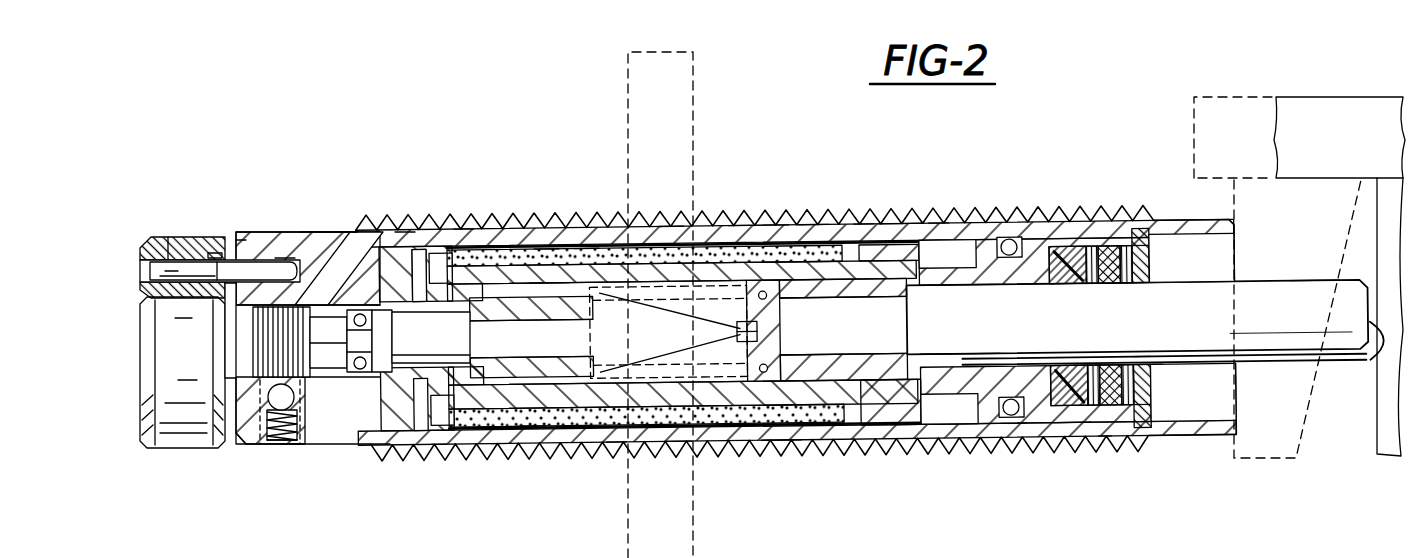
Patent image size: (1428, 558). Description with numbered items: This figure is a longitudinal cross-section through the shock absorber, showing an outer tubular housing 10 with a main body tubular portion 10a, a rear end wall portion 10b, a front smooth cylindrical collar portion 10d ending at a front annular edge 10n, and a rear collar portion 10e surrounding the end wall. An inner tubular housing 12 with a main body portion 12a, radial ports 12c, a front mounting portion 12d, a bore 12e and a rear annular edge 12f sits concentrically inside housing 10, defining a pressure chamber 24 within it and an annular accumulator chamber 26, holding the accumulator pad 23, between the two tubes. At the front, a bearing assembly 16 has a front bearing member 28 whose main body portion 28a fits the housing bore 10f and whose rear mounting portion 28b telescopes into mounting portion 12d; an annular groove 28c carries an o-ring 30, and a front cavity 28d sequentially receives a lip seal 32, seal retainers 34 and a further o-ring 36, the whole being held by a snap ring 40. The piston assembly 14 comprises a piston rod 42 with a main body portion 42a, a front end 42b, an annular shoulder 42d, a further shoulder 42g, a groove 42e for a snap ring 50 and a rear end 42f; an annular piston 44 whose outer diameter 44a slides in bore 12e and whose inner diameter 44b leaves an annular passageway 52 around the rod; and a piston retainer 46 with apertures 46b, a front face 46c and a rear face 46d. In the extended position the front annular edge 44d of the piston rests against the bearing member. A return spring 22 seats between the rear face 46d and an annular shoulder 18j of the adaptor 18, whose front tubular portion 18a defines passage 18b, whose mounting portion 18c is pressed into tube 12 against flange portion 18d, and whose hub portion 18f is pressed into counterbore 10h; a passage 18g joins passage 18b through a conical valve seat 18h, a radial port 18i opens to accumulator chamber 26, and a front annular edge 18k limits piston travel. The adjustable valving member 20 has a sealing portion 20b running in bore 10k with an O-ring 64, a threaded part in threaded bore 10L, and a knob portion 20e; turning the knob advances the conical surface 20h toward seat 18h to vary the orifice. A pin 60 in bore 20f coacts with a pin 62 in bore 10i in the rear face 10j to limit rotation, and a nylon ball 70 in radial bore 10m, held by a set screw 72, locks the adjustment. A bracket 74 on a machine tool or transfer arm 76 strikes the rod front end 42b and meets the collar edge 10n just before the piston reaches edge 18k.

The outer tubular housing 10 is at (736, 285).
The main body tubular portion 10a is at (637, 208).
The rear end wall portion 10b is at (320, 247).
The front end collar portion 10d is at (1200, 200).
The rear collar portion 10e is at (362, 230).
The bore of outer tubular housing 10f is at (1209, 243).
The central counterbore 10h is at (405, 233).
The bore for pin 10i is at (283, 262).
The rear face of end wall 10j is at (233, 247).
The bore in end wall 10k is at (360, 372).
The threaded bore portion 10L is at (236, 442).
The radial bore 10m is at (287, 452).
The front annular edge of collar portion 10n is at (1242, 442).
The inner tubular housing 12 is at (590, 457).
The main body portion of inner tubular housing 12a is at (617, 457).
The ports 12c is at (893, 220).
The front mounting portion 12d is at (940, 230).
The bore of inner tubular housing 12e is at (865, 217).
The rear annular edge of inner tubular housing 12f is at (466, 233).
The piston assembly 14 is at (975, 298).
The bearing assembly 16 is at (1053, 223).
The adaptor 18 is at (545, 425).
The front tubular portion of adaptor 18a is at (548, 233).
The central axial passage 18b is at (505, 340).
The mounting portion of adaptor 18c is at (533, 425).
The annular flange portion 18d is at (503, 442).
The mounting hub portion 18f is at (377, 452).
The central axial passage through hub 18g is at (437, 457).
The conical valve seat 18h is at (496, 233).
The radial port 18i is at (432, 247).
The annular shoulder of adaptor 18j is at (525, 430).
The front annular edge of adaptor 18k is at (587, 233).
The adjustable valving member 20 is at (601, 337).
The sealing portion 20b is at (325, 288).
The knob portion 20e is at (173, 453).
The axial bore in knob portion 20f is at (140, 270).
The conical forward surface of needle valve portion 20h is at (460, 313).
The return spring 22 is at (550, 285).
The accumulator pad 23 is at (607, 233).
The pressure chamber 24 is at (673, 233).
The annular accumulator chamber 26 is at (677, 455).
The front bearing member 28 is at (1028, 432).
The main body portion of bearing member 28a is at (1073, 425).
The rear reduced diameter mounting portion 28b is at (905, 430).
The annular groove 28c is at (1017, 227).
The front cavity 28d is at (1147, 400).
The o-ring 30 is at (1012, 420).
The lip seal 32 is at (1093, 227).
The seal retainers 34 is at (1133, 362).
The further o-ring 36 is at (1127, 227).
The snap ring 40 is at (1153, 377).
The piston rod 42 is at (1257, 275).
The main body portion of piston rod 42a is at (1311, 283).
The front end of piston rod 42b is at (1378, 345).
The annular shoulder 42d is at (920, 342).
The annular groove 42e is at (737, 332).
The rear end of piston rod 42f is at (695, 345).
The annular shoulder between reduced diameter portions 42g is at (780, 333).
The piston 44 is at (815, 425).
The outer diameter of piston 44a is at (813, 220).
The inner diameter of piston 44b is at (867, 355).
The front annular edge of piston 44d is at (913, 220).
The piston retainer 46 is at (712, 442).
The apertures 46b is at (778, 218).
The front annular face of piston retainer 46c is at (790, 447).
The rear annular face of piston retainer 46d is at (770, 453).
The snap ring 50 is at (740, 233).
The annular axial passageway 52 is at (915, 298).
The pin 60 is at (183, 233).
The rearwardly projecting pin 62 is at (252, 267).
The O-ring 64 is at (402, 387).
The soft nylon ball 70 is at (258, 268).
The set screw 72 is at (277, 452).
The bracket 74 is at (1376, 432).
The machine tool or transfer arm 76 is at (1339, 137).